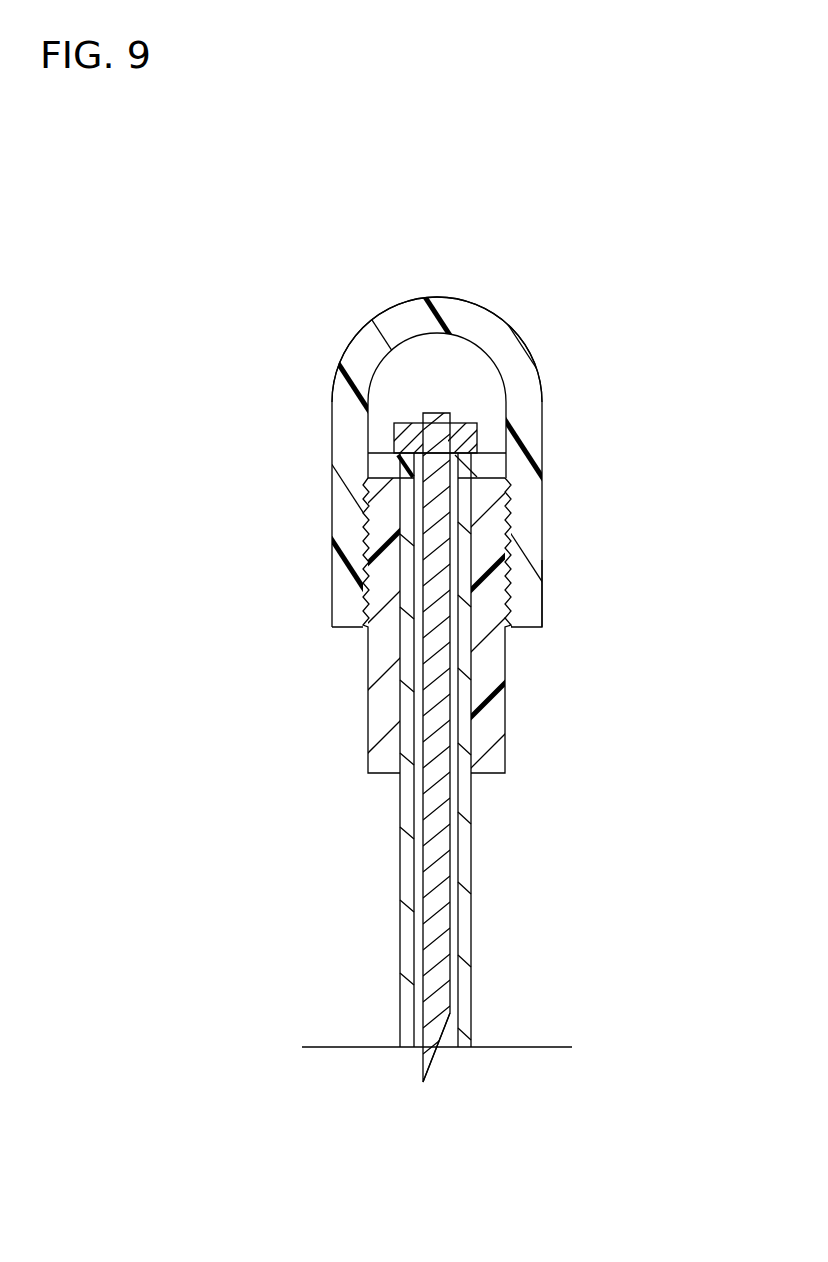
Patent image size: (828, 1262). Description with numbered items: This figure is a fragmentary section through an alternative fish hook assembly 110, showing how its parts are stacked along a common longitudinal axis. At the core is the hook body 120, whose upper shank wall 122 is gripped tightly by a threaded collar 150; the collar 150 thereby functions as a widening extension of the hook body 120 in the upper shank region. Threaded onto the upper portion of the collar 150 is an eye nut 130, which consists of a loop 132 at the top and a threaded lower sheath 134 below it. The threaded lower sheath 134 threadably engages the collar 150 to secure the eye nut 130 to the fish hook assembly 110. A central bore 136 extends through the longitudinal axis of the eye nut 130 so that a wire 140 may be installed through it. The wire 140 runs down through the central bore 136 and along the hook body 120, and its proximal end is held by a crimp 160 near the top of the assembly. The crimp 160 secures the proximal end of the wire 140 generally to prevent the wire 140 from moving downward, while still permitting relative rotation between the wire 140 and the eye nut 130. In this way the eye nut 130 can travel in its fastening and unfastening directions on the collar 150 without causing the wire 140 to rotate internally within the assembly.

The fish hook assembly 110 is at (578, 200).
The hook body 120 is at (472, 867).
The upper shank wall 122 is at (407, 930).
The eye nut 130 is at (542, 460).
The loop 132 is at (403, 300).
The threaded lower sheath 134 is at (542, 602).
The central bore 136 is at (417, 480).
The wire 140 is at (436, 413).
The threaded collar 150 is at (367, 718).
The crimp 160 is at (400, 433).